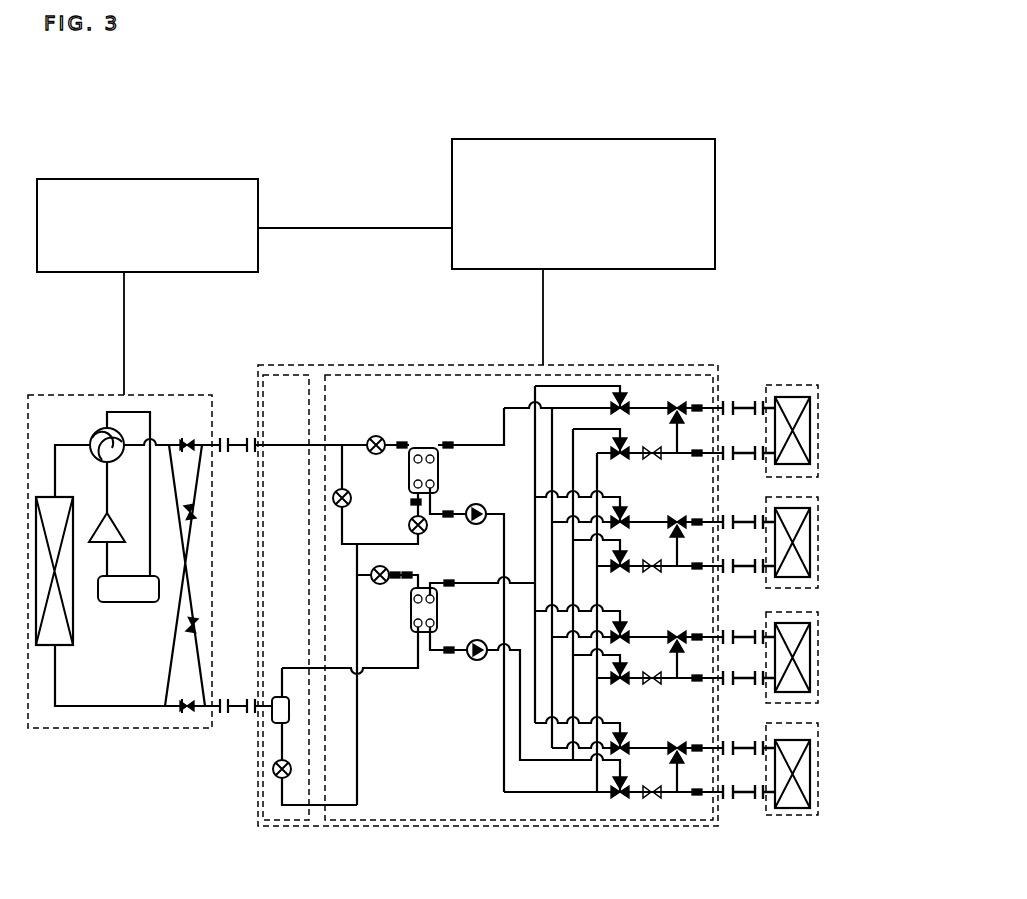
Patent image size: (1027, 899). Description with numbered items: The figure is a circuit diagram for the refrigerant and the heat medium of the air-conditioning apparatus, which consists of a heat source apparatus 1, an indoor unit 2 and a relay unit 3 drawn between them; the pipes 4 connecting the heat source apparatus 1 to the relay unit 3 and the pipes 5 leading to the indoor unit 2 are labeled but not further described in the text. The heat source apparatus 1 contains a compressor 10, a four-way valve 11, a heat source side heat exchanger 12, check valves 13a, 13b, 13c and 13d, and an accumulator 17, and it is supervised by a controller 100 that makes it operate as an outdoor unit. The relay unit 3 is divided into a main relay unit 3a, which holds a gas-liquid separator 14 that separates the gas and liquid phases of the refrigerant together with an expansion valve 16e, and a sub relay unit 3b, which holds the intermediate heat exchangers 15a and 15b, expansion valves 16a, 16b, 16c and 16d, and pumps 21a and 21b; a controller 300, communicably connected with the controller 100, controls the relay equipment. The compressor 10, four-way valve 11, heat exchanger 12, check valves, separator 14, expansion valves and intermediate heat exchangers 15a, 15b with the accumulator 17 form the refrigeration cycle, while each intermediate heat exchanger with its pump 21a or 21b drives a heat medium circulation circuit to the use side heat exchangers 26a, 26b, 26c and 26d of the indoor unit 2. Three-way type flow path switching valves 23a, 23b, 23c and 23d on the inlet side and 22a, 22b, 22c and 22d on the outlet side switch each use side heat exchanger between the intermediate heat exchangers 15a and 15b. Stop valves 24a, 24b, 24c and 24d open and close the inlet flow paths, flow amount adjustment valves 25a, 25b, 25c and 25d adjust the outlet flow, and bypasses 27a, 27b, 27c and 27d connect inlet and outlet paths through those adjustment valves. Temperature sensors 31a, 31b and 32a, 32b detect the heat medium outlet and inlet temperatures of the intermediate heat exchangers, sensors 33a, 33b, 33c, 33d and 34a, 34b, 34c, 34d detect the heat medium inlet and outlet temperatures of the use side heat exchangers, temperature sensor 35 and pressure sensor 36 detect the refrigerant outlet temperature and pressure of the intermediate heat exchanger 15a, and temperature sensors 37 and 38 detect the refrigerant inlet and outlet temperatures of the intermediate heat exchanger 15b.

The heat source apparatus 1 is at (62, 395).
The indoor unit 2 is at (778, 385).
The relay unit 3 is at (428, 365).
The main relay unit 3a is at (280, 375).
The sub relay unit 3b is at (368, 375).
The refrigerant pipe 4 is at (226, 438).
The heat medium pipe 5 is at (744, 401).
The compressor 10 is at (98, 518).
The four-way valve 11 is at (92, 436).
The heat source side heat exchanger 12 is at (60, 648).
The check valve 13a is at (186, 714).
The check valve 13b is at (190, 634).
The check valve 13c is at (202, 515).
The check valve 13d is at (187, 438).
The gas-liquid separator 14 is at (272, 716).
The intermediate heat exchanger 15a is at (418, 632).
The intermediate heat exchanger 15b is at (425, 448).
The expansion valve 16a is at (389, 578).
The expansion valve 16b is at (333, 490).
The expansion valve 16c is at (376, 436).
The expansion valve 16d is at (357, 588).
The expansion valve 16e is at (272, 772).
The accumulator 17 is at (120, 602).
The pump 21a is at (477, 660).
The pump 21b is at (476, 504).
The flow path switching valve 22a is at (608, 795).
The flow path switching valve 22b is at (636, 700).
The flow path switching valve 22c is at (636, 586).
The flow path switching valve 22d is at (636, 472).
The flow path switching valve 23a is at (629, 752).
The flow path switching valve 23b is at (631, 641).
The flow path switching valve 23c is at (629, 526).
The flow path switching valve 23d is at (629, 412).
The stop valve 24a is at (668, 806).
The stop valve 24b is at (655, 683).
The stop valve 24c is at (655, 571).
The stop valve 24d is at (655, 457).
The flow amount adjustment valve 25a is at (680, 754).
The flow amount adjustment valve 25b is at (680, 643).
The flow amount adjustment valve 25c is at (680, 528).
The flow amount adjustment valve 25d is at (680, 414).
The use side heat exchanger 26a is at (800, 808).
The use side heat exchanger 26b is at (788, 692).
The use side heat exchanger 26c is at (785, 577).
The use side heat exchanger 26d is at (785, 464).
The bypass 27a is at (654, 772).
The bypass 27b is at (624, 685).
The bypass 27c is at (622, 573).
The bypass 27d is at (622, 460).
The first temperature sensor 31a is at (449, 654).
The first temperature sensor 31b is at (448, 518).
The second temperature sensor 32a is at (449, 587).
The second temperature sensor 32b is at (450, 441).
The third temperature sensor 33a is at (697, 796).
The third temperature sensor 33b is at (697, 682).
The third temperature sensor 33c is at (697, 570).
The third temperature sensor 33d is at (697, 457).
The fourth temperature sensor 34a is at (697, 752).
The fourth temperature sensor 34b is at (697, 641).
The fourth temperature sensor 34c is at (697, 526).
The fourth temperature sensor 34d is at (697, 412).
The fifth temperature sensor 35 is at (407, 580).
The pressure sensor 36 is at (395, 580).
The sixth temperature sensor 37 is at (410, 503).
The seventh temperature sensor 38 is at (402, 449).
The controller 100 is at (195, 179).
The controller 300 is at (612, 139).